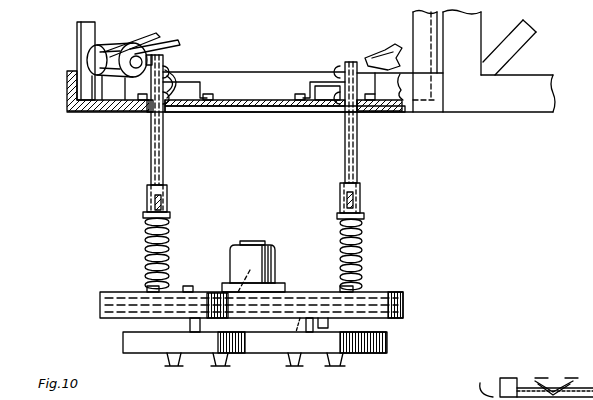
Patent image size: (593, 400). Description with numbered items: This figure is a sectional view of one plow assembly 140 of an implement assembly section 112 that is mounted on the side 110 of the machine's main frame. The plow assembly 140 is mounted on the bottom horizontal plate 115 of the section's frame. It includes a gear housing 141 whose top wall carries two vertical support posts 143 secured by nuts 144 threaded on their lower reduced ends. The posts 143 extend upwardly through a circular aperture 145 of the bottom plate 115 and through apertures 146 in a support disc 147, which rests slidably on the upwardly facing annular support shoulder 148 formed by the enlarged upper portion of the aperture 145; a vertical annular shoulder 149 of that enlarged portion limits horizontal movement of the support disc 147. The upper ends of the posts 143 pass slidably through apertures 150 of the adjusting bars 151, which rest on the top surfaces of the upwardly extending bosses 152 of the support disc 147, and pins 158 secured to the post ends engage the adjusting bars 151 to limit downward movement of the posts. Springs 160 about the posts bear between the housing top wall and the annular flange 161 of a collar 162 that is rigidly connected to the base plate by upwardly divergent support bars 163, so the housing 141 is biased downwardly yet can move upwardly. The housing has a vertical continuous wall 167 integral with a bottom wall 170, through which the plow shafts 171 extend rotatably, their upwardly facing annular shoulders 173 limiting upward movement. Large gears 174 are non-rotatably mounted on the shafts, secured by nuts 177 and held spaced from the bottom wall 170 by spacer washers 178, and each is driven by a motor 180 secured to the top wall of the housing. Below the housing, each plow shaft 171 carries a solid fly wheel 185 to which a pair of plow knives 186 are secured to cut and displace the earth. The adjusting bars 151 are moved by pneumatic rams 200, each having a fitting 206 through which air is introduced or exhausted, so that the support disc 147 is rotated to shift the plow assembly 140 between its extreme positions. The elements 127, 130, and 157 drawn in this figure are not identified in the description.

The side of the main frame 110 is at (530, 107).
The implement assembly section 112 is at (63, 96).
The bottom horizontal plate 115 is at (398, 116).
The guide 127 is at (585, 386).
The support 130 is at (524, 383).
The plow assembly 140 is at (190, 212).
The gear housing 141 is at (97, 302).
The vertical support post 143 is at (151, 148).
The nut 144 is at (188, 292).
The circular aperture 145 is at (254, 111).
The aperture in support disc 146 is at (165, 113).
The support disc 147 is at (250, 99).
The annular support shoulder 148 is at (142, 110).
The vertical annular shoulder 149 is at (118, 110).
The aperture of adjusting bar 150 is at (340, 66).
The adjusting bar 151 is at (327, 92).
The boss 152 is at (178, 76).
The bracket 157 is at (202, 97).
The pin 158 is at (178, 86).
The spring 160 is at (170, 250).
The annular flange 161 is at (143, 214).
The collar 162 is at (147, 192).
The support bar 163 is at (162, 198).
The vertical continuous wall 167 is at (404, 307).
The bottom wall 170 is at (112, 318).
The plow shaft 171 is at (188, 326).
The annular shoulder 173 is at (297, 323).
The large gear 174 is at (138, 288).
The nut 177 is at (224, 273).
The spacer washer 178 is at (130, 307).
The motor 180 is at (278, 265).
The fly wheel 185 is at (123, 341).
The plow knife 186 is at (164, 362).
The pneumatic ram 200 is at (392, 40).
The fitting 206 is at (110, 45).